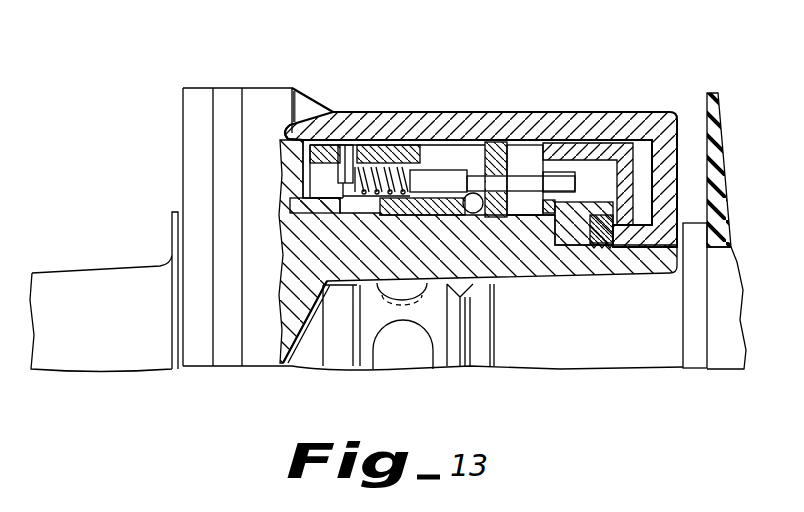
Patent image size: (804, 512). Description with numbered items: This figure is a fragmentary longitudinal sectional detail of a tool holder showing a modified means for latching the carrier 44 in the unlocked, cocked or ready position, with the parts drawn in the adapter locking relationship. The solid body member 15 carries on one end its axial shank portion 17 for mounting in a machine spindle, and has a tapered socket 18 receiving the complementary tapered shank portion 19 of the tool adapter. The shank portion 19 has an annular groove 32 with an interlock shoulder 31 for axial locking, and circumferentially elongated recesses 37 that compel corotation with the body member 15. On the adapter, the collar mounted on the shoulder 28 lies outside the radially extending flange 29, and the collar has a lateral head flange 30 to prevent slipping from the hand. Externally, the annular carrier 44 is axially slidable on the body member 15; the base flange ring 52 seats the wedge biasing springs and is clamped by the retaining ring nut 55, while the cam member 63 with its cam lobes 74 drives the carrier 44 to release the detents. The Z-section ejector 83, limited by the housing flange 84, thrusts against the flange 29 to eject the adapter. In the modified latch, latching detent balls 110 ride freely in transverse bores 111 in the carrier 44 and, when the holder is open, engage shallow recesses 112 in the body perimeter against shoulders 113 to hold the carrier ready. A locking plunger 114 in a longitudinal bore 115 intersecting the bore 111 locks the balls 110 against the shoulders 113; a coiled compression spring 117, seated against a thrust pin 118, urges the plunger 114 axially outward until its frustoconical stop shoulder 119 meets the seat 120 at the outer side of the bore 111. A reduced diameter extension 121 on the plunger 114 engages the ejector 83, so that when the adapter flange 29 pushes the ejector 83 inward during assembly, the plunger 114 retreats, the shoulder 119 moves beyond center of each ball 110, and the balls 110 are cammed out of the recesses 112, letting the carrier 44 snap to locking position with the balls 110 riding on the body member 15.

The body member 15 is at (297, 238).
The shank portion 17 is at (96, 322).
The socket 18 is at (483, 325).
The shank portion 19 is at (636, 362).
The shoulder 28 is at (730, 353).
The flange 29 is at (697, 308).
The head flange 30 is at (717, 140).
The interlock shoulder 31 is at (457, 355).
The annular groove 32 is at (472, 348).
The recesses 37 is at (400, 353).
The carrier 44 is at (428, 176).
The base flange ring 52 is at (585, 240).
The retaining ring nut 55 is at (605, 245).
The cam member 63 is at (285, 158).
The cam lobes 74 is at (456, 181).
The ejector 83 is at (635, 140).
The housing flange 84 is at (668, 160).
The latching detent balls 110 is at (485, 212).
The bore 111 is at (416, 299).
The recesses 112 is at (592, 160).
The shoulders 113 is at (522, 248).
The locking plunger 114 is at (447, 172).
The longitudinal bore 115 is at (466, 178).
The coiled compression spring 117 is at (383, 150).
The thrust pin 118 is at (345, 165).
The stop shoulder 119 is at (520, 182).
The seat 120 is at (530, 215).
The extension 121 is at (540, 195).